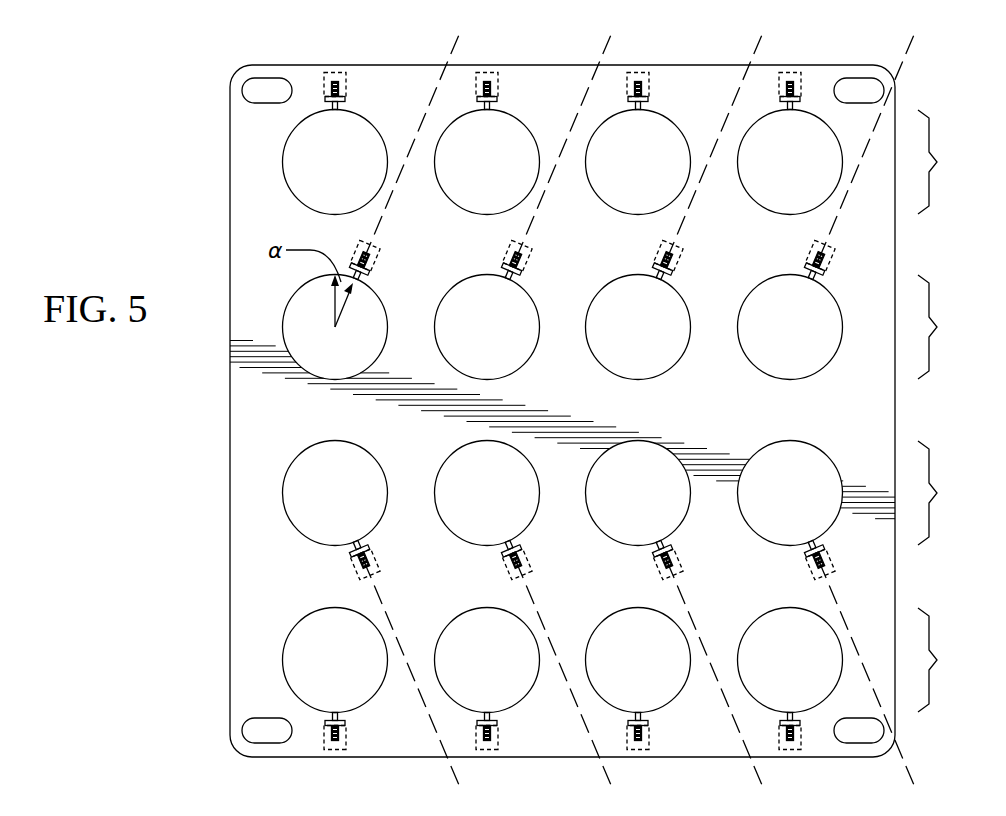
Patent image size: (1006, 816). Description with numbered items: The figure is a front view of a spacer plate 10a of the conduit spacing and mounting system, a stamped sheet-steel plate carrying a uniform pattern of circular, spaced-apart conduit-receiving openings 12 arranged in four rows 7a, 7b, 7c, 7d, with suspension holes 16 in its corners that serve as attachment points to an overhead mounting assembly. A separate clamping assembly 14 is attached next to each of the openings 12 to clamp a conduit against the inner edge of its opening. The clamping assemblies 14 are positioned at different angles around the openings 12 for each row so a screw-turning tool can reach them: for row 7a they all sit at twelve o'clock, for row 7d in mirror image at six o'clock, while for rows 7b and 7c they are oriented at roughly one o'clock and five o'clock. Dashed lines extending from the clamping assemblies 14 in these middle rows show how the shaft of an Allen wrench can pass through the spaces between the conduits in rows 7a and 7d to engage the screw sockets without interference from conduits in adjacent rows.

The spacer plate 10a is at (622, 50).
The conduit-receiving openings 12 is at (284, 152).
The clamping assembly 14 is at (351, 70).
The suspension holes 16 is at (857, 79).
The row of conduit-receiving openings 7a is at (943, 162).
The row of conduit-receiving openings 7b is at (944, 327).
The row of conduit-receiving openings 7c is at (943, 493).
The row of conduit-receiving openings 7d is at (944, 660).